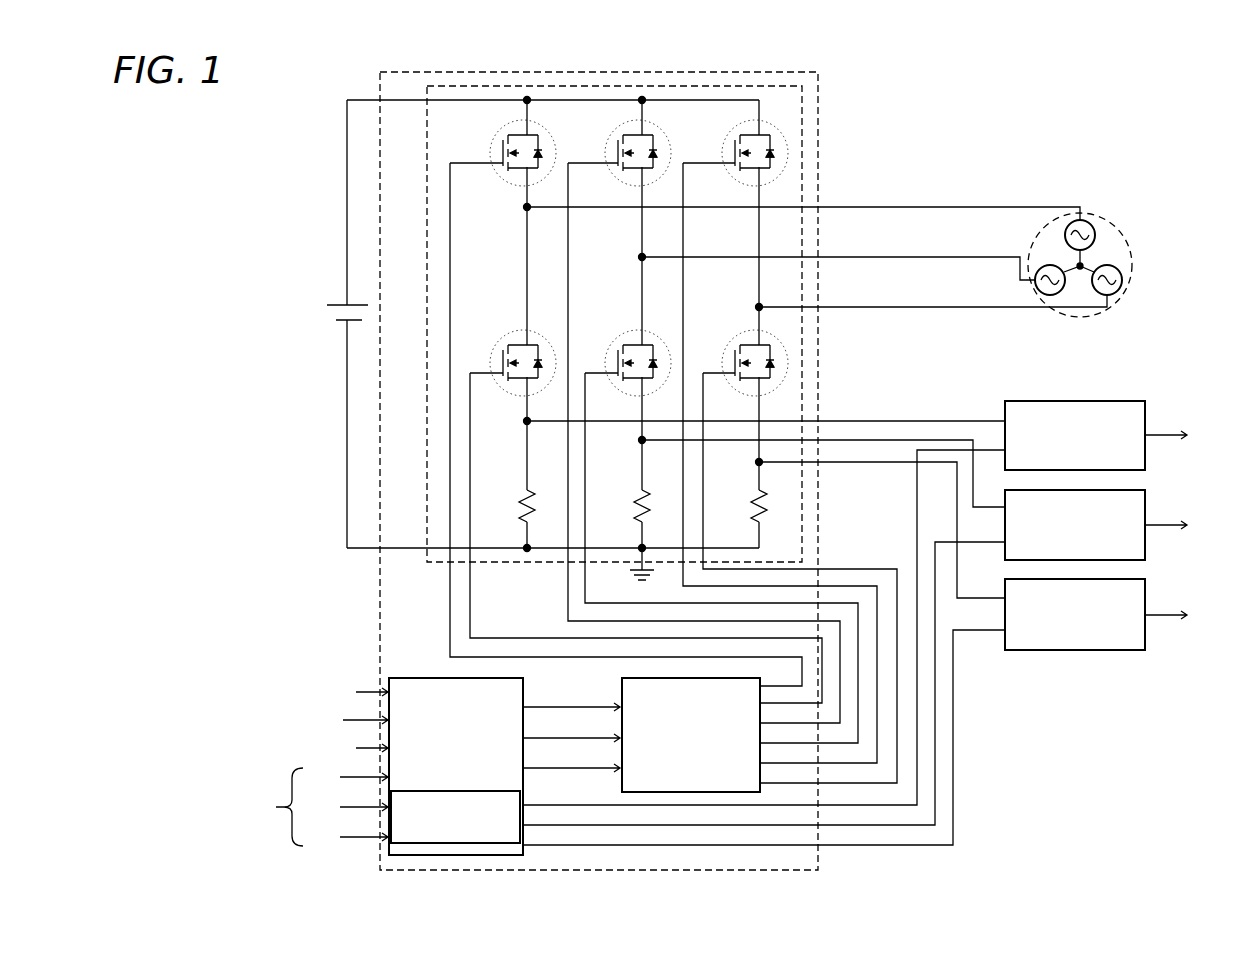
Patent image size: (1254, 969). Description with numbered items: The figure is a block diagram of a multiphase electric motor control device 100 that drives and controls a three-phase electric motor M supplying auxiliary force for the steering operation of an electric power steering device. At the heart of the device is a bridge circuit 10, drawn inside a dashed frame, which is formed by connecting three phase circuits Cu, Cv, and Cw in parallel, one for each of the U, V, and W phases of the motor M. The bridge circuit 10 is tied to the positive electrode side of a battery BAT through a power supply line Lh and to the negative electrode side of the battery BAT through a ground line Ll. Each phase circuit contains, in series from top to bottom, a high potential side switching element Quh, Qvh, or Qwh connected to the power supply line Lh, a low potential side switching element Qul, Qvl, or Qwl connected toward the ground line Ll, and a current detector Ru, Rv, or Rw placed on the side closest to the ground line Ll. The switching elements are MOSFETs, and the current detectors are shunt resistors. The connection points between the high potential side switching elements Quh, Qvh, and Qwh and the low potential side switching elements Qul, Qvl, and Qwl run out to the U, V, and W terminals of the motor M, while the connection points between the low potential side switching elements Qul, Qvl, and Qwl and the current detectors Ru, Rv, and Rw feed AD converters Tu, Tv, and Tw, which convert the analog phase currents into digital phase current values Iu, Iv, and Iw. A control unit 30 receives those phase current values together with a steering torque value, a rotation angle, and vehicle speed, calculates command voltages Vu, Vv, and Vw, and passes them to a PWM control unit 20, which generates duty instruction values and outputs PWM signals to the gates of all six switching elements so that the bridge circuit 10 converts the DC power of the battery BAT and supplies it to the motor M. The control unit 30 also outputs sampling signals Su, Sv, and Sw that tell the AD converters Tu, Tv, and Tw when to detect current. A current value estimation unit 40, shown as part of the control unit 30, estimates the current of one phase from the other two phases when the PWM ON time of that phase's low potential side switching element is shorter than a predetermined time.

The multiphase electric motor control device 100 is at (380, 130).
The bridge circuit 10 is at (427, 172).
The PWM control unit 20 is at (662, 678).
The control unit 30 is at (389, 682).
The current value estimation unit 40 is at (488, 843).
The three-phase electric motor M is at (1115, 225).
The battery BAT is at (330, 312).
The power supply line Lh is at (553, 88).
The ground line Ll is at (553, 563).
The high potential side switching element Quh is at (488, 153).
The high potential side switching element Qvh is at (605, 153).
The high potential side switching element Qwh is at (720, 153).
The low potential side switching element Qul is at (518, 333).
The low potential side switching element Qvl is at (631, 333).
The low potential side switching element Qwl is at (748, 333).
The phase circuit Cu is at (527, 238).
The phase circuit Cv is at (642, 248).
The phase circuit Cw is at (759, 238).
The current detector Ru is at (521, 491).
The current detector Rv is at (636, 491).
The current detector Rw is at (753, 491).
The AD converter Tu is at (1145, 452).
The AD converter Tv is at (1145, 542).
The AD converter Tw is at (1145, 632).